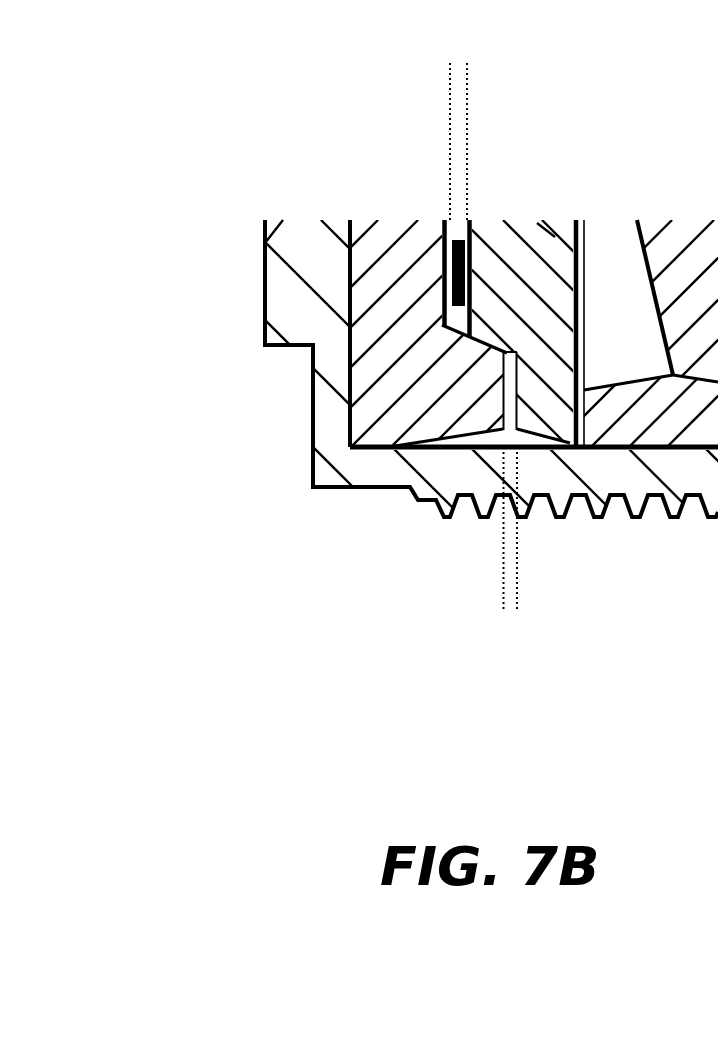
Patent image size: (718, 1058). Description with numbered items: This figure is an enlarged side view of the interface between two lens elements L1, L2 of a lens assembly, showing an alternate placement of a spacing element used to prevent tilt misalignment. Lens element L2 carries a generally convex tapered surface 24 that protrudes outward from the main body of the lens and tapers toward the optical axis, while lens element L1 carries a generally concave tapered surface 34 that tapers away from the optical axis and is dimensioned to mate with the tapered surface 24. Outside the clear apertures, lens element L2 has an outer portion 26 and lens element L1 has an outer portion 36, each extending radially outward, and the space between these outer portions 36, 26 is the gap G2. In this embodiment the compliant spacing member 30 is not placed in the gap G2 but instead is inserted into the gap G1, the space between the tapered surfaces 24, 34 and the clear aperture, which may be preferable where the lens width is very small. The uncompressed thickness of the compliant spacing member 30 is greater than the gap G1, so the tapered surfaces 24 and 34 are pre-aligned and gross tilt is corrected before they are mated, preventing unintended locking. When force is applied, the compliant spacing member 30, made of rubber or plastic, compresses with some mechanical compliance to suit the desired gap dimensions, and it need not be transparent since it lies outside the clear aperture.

The tapered surface 24 is at (507, 353).
The outer portion 26 is at (548, 440).
The compliant spacing member 30 is at (443, 224).
The tapered surface 34 is at (469, 336).
The outer portion 36 is at (448, 444).
The lens element L1 is at (348, 428).
The lens element L2 is at (537, 223).
The gap G1 is at (400, 90).
The gap G2 is at (450, 600).